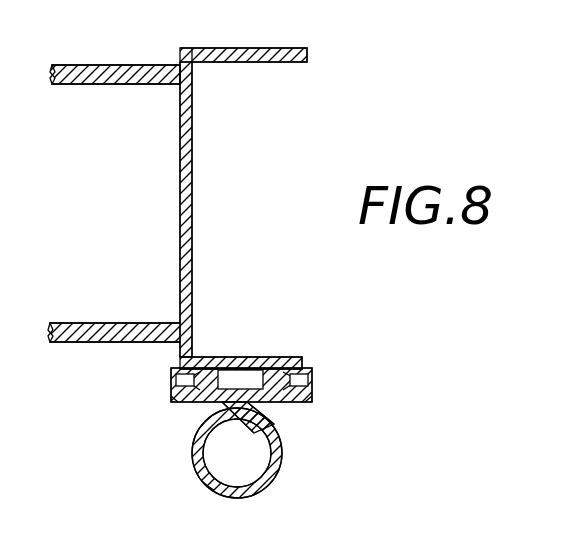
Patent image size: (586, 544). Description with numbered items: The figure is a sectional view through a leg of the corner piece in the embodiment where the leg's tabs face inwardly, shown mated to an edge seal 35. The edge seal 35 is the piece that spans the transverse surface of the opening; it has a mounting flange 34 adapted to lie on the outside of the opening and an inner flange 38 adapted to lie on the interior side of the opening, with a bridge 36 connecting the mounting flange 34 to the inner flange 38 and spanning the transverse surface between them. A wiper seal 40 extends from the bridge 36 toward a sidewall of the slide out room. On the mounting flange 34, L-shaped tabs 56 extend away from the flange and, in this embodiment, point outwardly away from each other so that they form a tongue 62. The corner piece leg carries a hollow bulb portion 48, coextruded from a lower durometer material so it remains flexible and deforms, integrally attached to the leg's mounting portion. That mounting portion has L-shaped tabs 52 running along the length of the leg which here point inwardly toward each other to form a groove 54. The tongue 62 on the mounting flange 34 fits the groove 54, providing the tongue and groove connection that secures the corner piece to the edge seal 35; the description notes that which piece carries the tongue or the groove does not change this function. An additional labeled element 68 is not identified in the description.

The mounting flange 34 is at (292, 358).
The edge seal 35 is at (298, 138).
The bridge 36 is at (180, 190).
The inner flange 38 is at (283, 62).
The wiper seal 40 is at (108, 65).
The bulb portion 48 is at (282, 467).
The L-shaped tabs 52 is at (303, 363).
The groove 54 is at (258, 404).
The L-shaped tabs 56 is at (310, 389).
The tongue 62 is at (240, 378).
The seam 68 is at (207, 475).